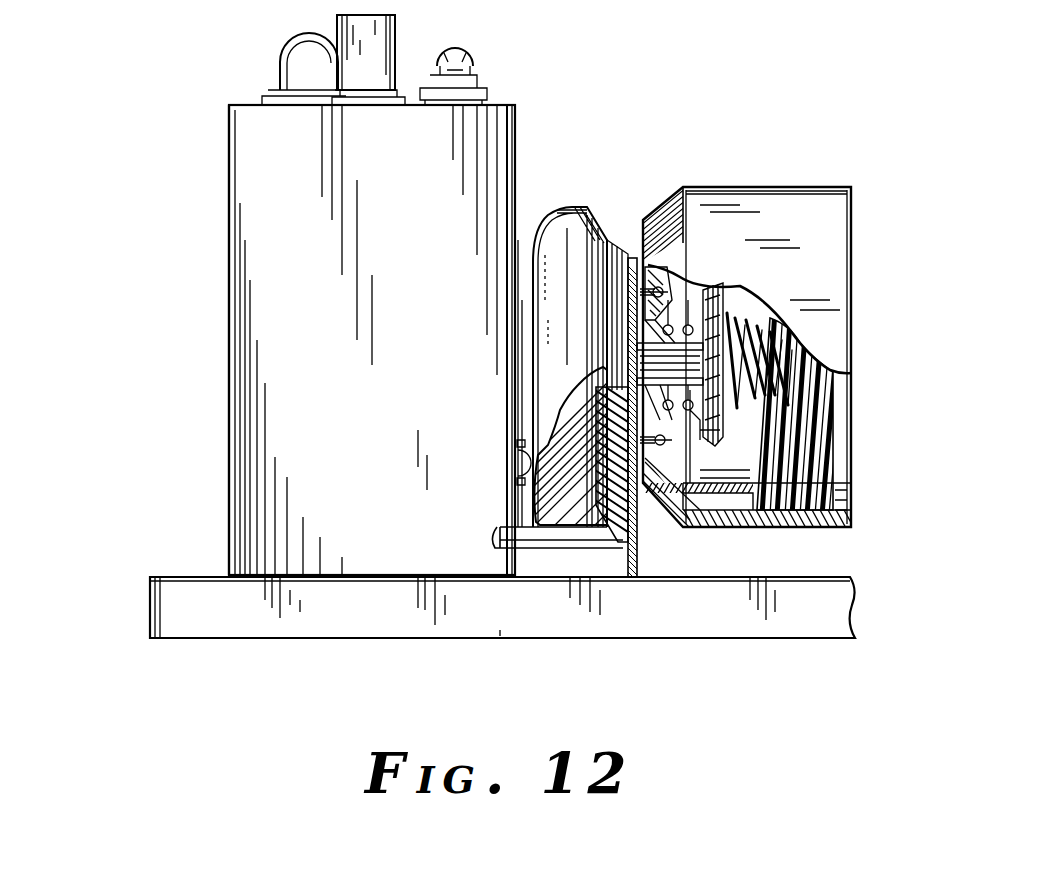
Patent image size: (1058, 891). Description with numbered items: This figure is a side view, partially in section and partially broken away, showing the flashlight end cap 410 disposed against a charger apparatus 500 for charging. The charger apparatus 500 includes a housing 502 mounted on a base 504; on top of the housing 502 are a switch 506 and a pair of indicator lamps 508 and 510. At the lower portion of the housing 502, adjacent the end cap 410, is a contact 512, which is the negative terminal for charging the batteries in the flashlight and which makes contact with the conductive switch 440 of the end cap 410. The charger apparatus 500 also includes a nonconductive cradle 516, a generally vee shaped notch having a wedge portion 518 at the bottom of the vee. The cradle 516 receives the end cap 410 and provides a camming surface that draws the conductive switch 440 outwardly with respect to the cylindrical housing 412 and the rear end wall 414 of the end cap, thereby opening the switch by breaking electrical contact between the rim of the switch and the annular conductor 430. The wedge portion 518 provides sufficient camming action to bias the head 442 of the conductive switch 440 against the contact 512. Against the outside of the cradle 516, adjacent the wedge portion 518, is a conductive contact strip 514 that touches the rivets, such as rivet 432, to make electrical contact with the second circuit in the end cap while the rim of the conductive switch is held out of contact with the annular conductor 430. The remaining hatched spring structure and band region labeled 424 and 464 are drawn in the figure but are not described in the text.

The end cap 410 is at (852, 220).
The cylindrical housing 412 is at (832, 275).
The rear end wall 414 is at (650, 267).
The hatched spring support 424 is at (745, 528).
The annular conductor 430 is at (642, 262).
The rivet 432 is at (690, 442).
The conductive switch 440 is at (557, 207).
The head 442 is at (562, 515).
The compression spring 464 is at (800, 352).
The charger apparatus 500 is at (227, 334).
The housing 502 is at (228, 468).
The base 504 is at (433, 630).
The switch 506 is at (383, 24).
The indicator lamp 508 is at (468, 58).
The indicator lamp 510 is at (283, 63).
The contact 512 is at (515, 482).
The conductive contact strip 514 is at (640, 533).
The nonconductive cradle 516 is at (637, 236).
The wedge portion 518 is at (607, 555).